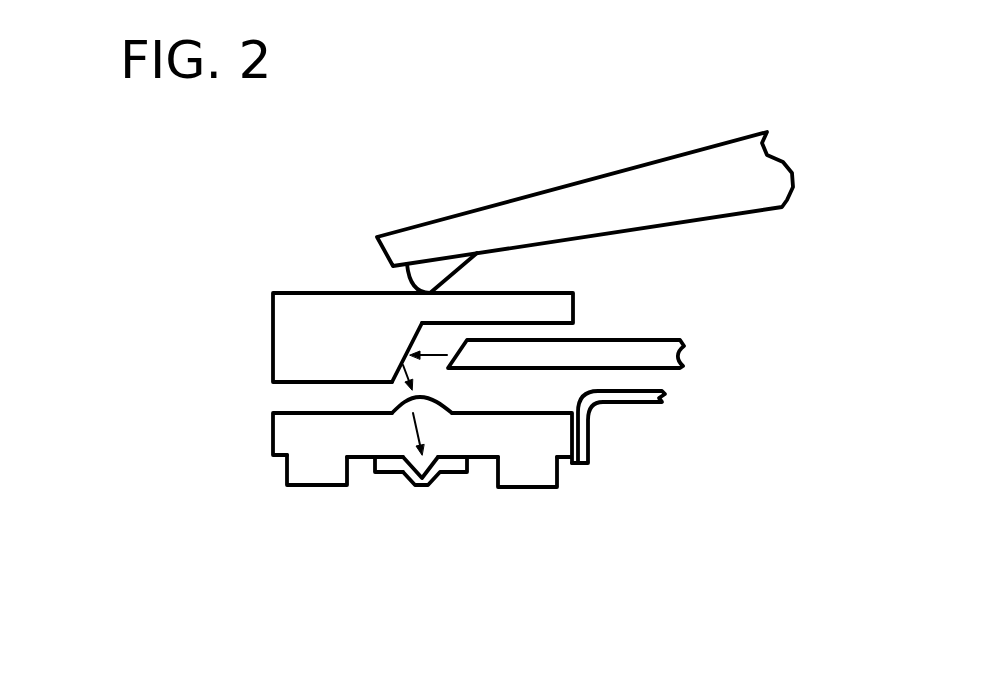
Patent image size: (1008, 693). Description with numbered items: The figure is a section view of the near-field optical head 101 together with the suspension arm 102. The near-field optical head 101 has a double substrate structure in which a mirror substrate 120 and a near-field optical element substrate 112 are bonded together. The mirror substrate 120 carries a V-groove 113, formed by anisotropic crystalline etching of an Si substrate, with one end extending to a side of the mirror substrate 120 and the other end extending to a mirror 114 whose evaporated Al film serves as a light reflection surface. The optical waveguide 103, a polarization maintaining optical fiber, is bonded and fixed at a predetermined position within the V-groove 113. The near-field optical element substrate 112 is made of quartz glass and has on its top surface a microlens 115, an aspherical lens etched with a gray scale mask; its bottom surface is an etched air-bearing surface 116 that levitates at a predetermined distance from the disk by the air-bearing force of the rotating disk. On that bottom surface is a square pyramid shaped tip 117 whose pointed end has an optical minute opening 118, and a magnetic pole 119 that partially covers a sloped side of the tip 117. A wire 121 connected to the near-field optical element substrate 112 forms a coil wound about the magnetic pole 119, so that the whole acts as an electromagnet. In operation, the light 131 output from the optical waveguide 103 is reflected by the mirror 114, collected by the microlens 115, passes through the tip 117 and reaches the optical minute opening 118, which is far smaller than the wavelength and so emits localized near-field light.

The near-field optical head 101 is at (235, 293).
The suspension arm 102 is at (590, 190).
The optical waveguide 103 is at (648, 353).
The near-field optical element substrate 112 is at (287, 442).
The V-groove 113 is at (513, 322).
The mirror 114 is at (393, 372).
The microlens 115 is at (408, 413).
The air-bearing surface 116 is at (310, 480).
The tip 117 is at (438, 478).
The optical minute opening 118 is at (423, 486).
The magnetic pole 119 is at (388, 474).
The mirror substrate 120 is at (348, 308).
The wire 121 is at (634, 400).
The light 131 is at (447, 355).